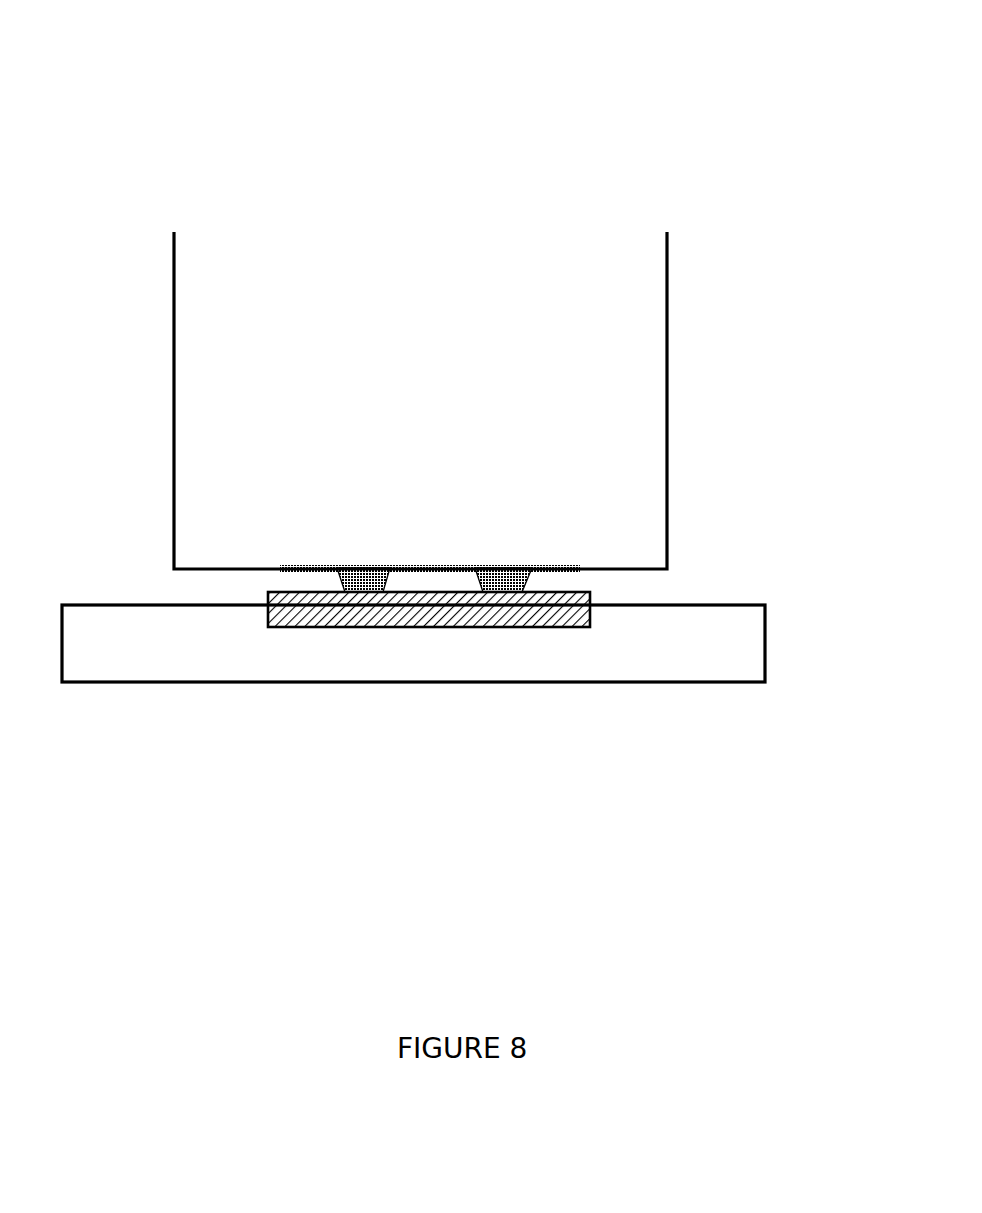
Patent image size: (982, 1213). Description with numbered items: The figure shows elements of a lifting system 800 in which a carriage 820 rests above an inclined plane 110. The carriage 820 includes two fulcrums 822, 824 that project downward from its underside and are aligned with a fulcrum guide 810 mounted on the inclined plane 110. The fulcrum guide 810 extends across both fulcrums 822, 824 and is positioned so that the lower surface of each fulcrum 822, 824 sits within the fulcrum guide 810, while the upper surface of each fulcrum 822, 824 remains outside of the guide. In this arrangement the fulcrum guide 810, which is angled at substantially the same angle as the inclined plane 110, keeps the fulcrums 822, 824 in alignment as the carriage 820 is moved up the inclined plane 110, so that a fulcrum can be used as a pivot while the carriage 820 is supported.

The lifting system 800 is at (128, 68).
The carriage 820 is at (170, 326).
The fulcrum guide 810 is at (232, 585).
The fulcrum 824 is at (376, 530).
The fulcrum 822 is at (483, 530).
The inclined plane 110 is at (720, 625).